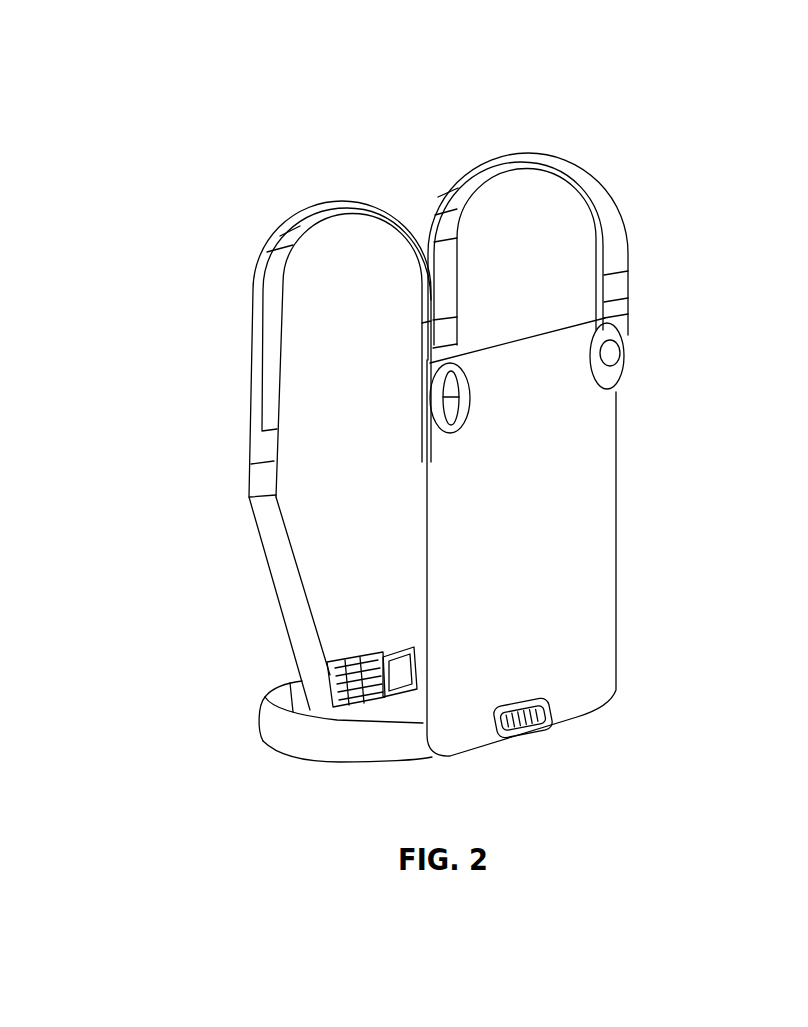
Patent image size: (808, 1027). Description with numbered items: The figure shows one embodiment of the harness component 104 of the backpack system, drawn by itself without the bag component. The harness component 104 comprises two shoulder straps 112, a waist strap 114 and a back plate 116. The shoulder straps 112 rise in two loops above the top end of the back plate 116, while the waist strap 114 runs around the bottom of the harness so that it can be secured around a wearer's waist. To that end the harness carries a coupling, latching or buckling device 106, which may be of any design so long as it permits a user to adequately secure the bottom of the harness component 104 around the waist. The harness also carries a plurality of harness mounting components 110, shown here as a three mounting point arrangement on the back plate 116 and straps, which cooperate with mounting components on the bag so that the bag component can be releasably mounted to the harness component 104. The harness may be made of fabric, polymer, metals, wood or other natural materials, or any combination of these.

The harness component 104 is at (501, 84).
The coupling, latching or buckling device 106 is at (340, 673).
The harness mounting components 110 is at (460, 424).
The shoulder straps 112 is at (287, 228).
The waist strap 114 is at (268, 719).
The back plate 116 is at (547, 531).